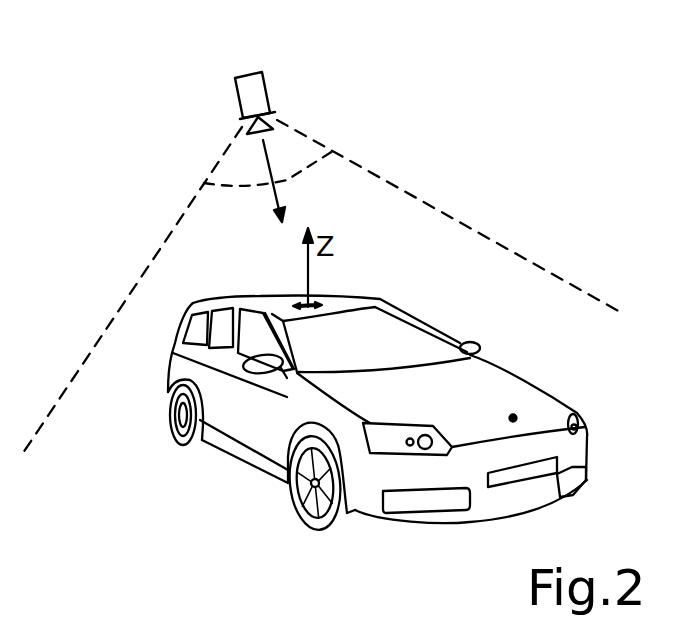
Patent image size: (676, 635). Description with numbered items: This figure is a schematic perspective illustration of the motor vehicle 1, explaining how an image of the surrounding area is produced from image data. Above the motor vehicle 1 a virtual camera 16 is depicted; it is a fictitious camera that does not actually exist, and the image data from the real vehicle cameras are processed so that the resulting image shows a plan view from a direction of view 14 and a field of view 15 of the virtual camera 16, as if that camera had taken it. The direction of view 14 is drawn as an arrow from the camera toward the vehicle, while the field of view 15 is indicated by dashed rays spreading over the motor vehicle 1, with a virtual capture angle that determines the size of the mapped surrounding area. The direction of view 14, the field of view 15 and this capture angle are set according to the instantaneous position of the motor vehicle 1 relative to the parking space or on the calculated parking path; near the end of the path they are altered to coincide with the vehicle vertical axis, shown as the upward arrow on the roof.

The motor vehicle 1 is at (497, 397).
The direction of view 14 is at (262, 150).
The field of view 15 is at (265, 140).
The virtual camera 16 is at (259, 94).